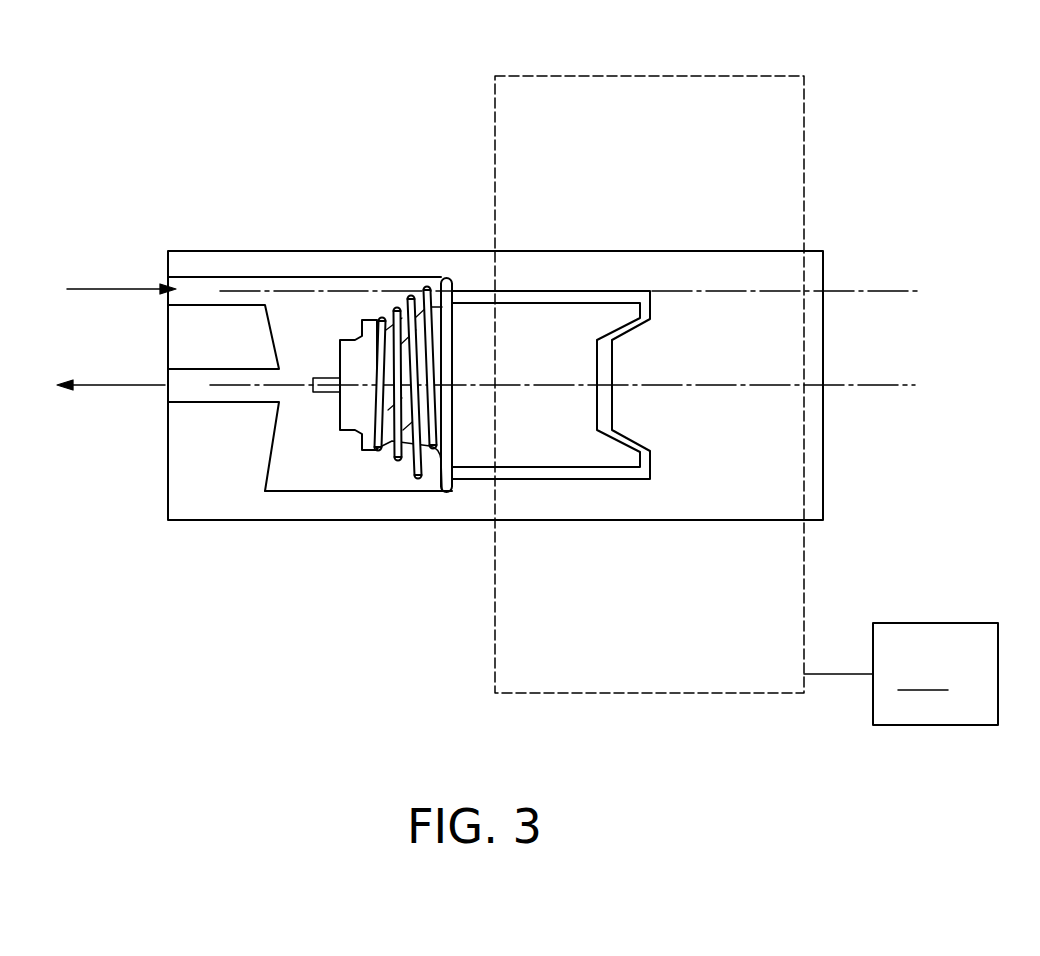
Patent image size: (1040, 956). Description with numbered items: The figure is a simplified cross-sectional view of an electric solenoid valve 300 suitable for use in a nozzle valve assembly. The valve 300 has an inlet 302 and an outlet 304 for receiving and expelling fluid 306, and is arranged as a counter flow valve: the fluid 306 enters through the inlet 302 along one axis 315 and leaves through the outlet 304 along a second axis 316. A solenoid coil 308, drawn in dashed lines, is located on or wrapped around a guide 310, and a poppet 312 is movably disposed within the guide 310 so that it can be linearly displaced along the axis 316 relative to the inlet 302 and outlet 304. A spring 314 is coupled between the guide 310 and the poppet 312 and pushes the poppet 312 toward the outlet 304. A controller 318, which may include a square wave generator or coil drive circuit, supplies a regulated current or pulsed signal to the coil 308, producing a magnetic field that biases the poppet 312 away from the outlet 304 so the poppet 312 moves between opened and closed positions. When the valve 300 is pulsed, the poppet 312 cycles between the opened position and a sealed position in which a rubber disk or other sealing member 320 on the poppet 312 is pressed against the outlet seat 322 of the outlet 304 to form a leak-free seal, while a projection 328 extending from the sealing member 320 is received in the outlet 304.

The electric solenoid valve 300 is at (198, 145).
The inlet 302 is at (198, 290).
The outlet 304 is at (195, 390).
The fluid 306 is at (110, 288).
The solenoid coil 308 is at (805, 97).
The guide 310 is at (353, 498).
The poppet 312 is at (466, 471).
The spring 314 is at (411, 298).
The axis 315 is at (892, 287).
The axis 316 is at (850, 388).
The controller 318 is at (901, 674).
The sealing member 320 is at (343, 345).
The outlet seat 322 is at (278, 363).
The projection 328 is at (312, 387).